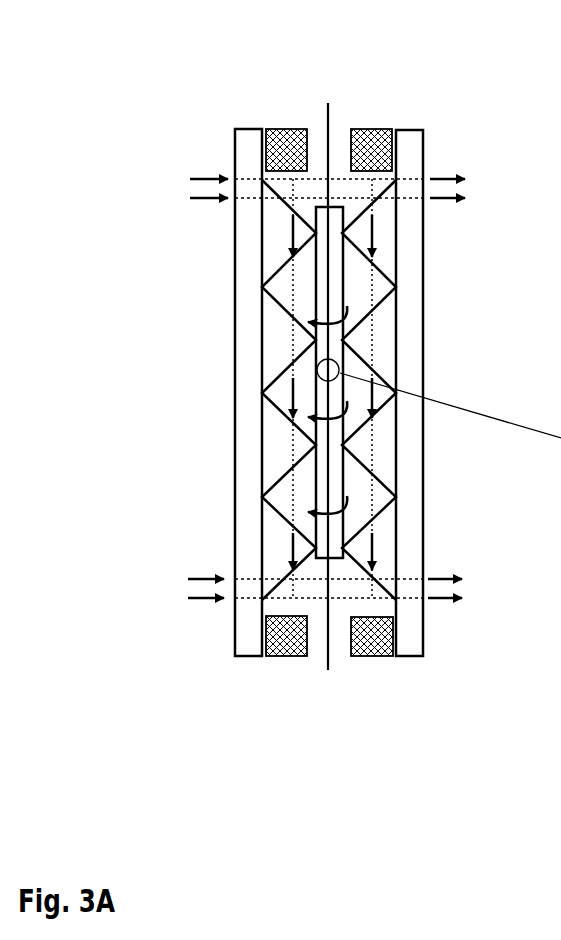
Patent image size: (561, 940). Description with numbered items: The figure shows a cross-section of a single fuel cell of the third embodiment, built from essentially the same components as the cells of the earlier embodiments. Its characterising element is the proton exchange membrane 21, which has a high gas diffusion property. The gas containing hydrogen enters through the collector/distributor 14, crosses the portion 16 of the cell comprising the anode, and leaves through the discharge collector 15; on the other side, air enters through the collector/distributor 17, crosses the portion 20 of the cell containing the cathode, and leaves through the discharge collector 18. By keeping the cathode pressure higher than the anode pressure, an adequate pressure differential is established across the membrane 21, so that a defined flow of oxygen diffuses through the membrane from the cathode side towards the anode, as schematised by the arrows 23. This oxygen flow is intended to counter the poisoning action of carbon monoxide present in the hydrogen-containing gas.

The collector/distributor 14 is at (425, 198).
The discharge collector 15 is at (430, 578).
The portion of the cell comprising the anode 16 is at (290, 443).
The collector/distributor 17 is at (425, 178).
The discharge collector 18 is at (432, 598).
The portion of cell containing the cathode 20 is at (372, 460).
The proton exchange membrane 21 is at (328, 118).
The arrows 23 is at (345, 315).